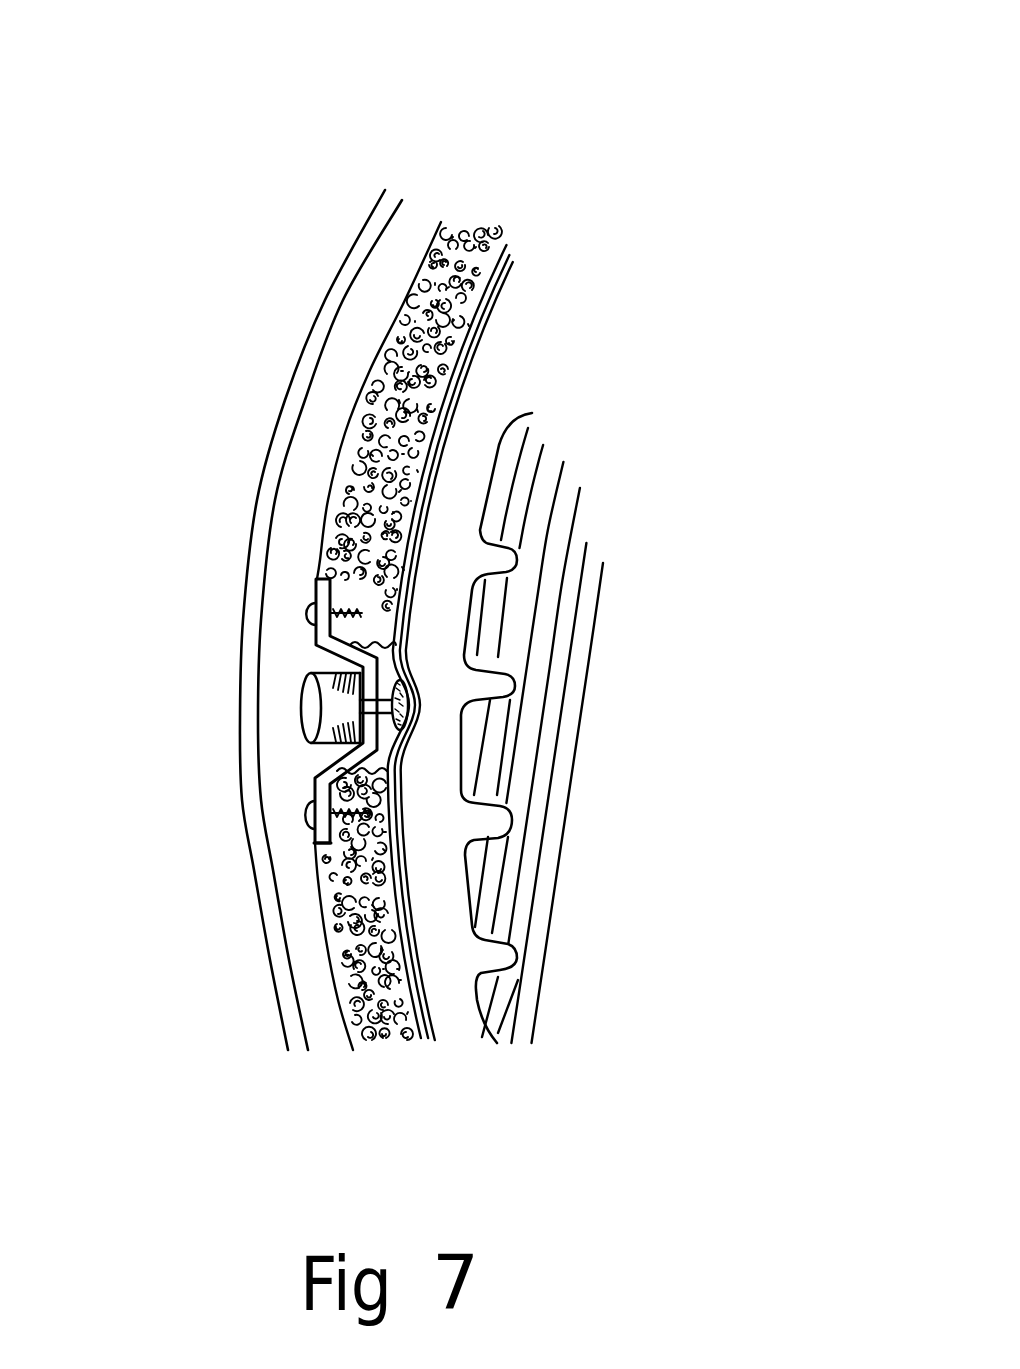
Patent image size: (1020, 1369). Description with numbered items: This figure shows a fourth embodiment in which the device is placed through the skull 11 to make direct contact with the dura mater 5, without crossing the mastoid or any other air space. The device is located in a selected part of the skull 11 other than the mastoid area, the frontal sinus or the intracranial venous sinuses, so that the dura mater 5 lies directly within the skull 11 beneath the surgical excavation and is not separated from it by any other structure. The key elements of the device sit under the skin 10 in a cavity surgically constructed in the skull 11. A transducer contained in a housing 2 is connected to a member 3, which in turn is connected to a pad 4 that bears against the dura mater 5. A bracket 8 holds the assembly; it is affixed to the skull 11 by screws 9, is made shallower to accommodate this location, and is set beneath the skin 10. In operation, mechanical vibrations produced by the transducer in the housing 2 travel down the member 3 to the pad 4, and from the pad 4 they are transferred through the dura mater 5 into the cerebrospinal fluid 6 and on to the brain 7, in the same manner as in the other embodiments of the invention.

The housing 2 is at (311, 710).
The member 3 is at (383, 740).
The pad 4 is at (392, 683).
The dura mater 5 is at (518, 258).
The cerebrospinal fluid 6 is at (477, 438).
The brain 7 is at (544, 735).
The bracket 8 is at (319, 847).
The screws 9 is at (311, 822).
The skin 10 is at (398, 195).
The skull 11 is at (472, 247).